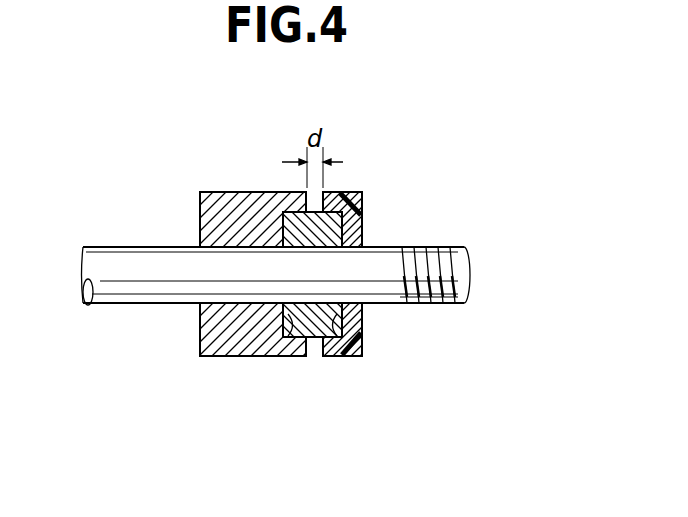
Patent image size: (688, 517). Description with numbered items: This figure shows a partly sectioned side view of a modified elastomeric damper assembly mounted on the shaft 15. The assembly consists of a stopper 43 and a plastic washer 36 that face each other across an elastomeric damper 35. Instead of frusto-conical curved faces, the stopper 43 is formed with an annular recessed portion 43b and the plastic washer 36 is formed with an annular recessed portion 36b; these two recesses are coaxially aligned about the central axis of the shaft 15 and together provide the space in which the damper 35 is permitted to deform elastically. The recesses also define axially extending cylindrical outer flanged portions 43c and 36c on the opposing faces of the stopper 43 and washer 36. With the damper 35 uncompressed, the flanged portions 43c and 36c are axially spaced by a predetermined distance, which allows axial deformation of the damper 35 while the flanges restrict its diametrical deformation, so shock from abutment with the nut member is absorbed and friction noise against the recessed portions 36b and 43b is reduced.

The shaft 15 is at (438, 250).
The damper 35 is at (298, 232).
The plastic washer 36 is at (367, 198).
The annular recessed portion 36b is at (345, 358).
The axially extending cylindrical outer flanged portion 36c is at (332, 358).
The stopper 43 is at (225, 357).
The annular recessed portion 43b is at (283, 357).
The axially extending cylindrical outer flanged portion 43c is at (297, 357).